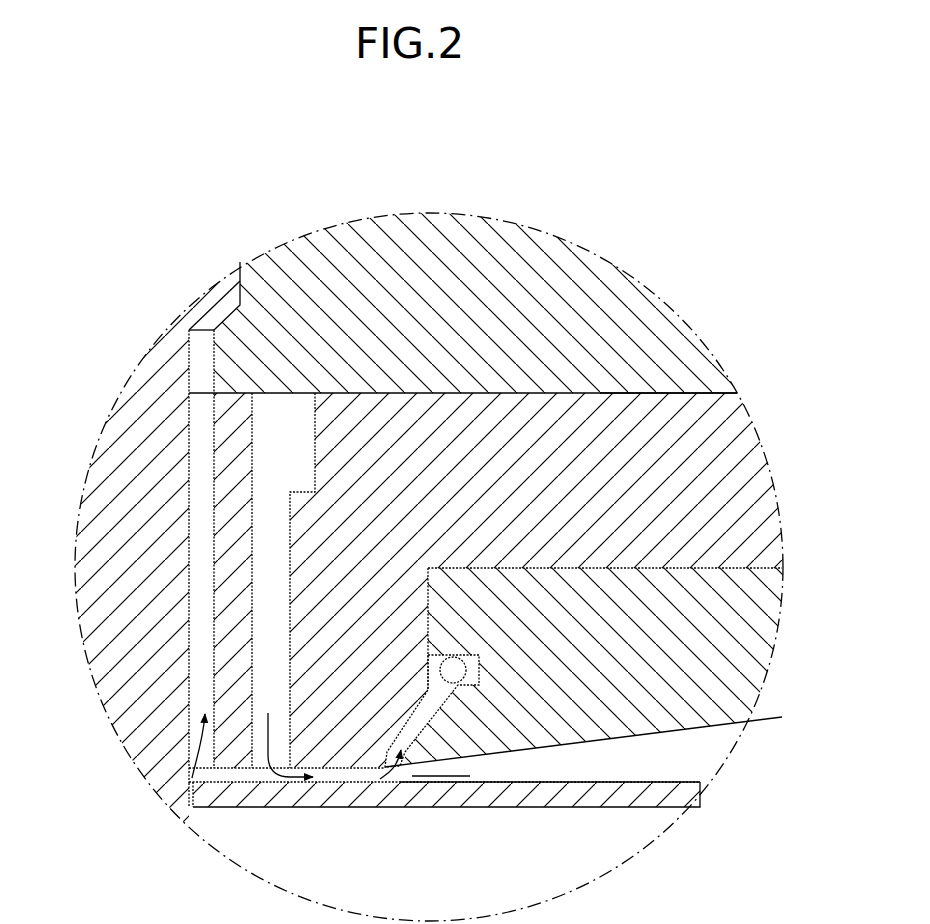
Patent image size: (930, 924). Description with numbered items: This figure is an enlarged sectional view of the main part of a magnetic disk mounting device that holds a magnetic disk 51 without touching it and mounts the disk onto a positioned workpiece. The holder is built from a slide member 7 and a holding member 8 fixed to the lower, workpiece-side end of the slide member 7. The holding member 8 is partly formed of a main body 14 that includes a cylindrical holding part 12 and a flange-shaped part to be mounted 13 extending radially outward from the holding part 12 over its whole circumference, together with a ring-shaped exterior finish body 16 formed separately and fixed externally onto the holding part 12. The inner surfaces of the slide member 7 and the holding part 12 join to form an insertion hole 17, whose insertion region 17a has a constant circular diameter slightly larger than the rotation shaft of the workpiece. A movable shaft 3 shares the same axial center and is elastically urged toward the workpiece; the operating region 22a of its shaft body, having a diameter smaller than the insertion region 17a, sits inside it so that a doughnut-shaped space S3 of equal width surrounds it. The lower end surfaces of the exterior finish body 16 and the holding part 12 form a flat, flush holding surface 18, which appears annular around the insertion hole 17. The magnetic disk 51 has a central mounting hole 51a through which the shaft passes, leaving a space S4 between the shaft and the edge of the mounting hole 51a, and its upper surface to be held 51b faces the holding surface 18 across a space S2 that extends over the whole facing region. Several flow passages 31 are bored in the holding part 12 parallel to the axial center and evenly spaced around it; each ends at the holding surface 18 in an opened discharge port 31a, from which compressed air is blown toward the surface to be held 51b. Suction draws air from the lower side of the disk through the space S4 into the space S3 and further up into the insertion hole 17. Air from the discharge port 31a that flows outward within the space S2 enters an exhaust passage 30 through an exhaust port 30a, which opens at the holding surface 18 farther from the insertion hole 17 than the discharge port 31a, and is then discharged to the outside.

The movable shaft 3 is at (128, 417).
The slide member 7 is at (543, 263).
The holding member 8 is at (737, 424).
The holding part 12 is at (417, 600).
The part to be mounted 13 is at (757, 512).
The main body 14 is at (748, 470).
The exterior finish body 16 is at (722, 668).
The insertion hole 17 is at (198, 540).
The insertion region 17a is at (213, 577).
The holding surface 18 is at (330, 768).
The operating region 22a is at (192, 435).
The exhaust passage 30 is at (447, 690).
The exhaust port 30a is at (400, 765).
The flow passage 31 is at (297, 410).
The discharge port 31a is at (262, 758).
The magnetic disk 51 is at (572, 808).
The mounting hole 51a is at (190, 788).
The surface to be held 51b is at (523, 781).
The space S2 is at (470, 777).
The space S3 is at (202, 632).
The space S4 is at (191, 810).